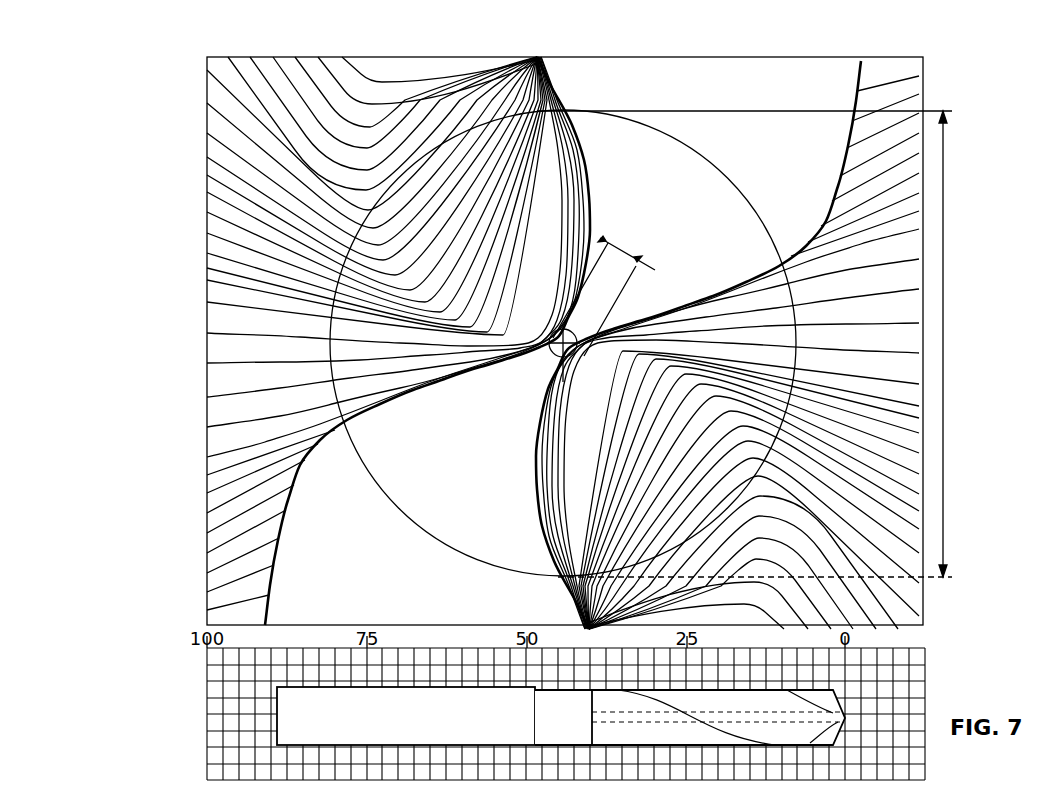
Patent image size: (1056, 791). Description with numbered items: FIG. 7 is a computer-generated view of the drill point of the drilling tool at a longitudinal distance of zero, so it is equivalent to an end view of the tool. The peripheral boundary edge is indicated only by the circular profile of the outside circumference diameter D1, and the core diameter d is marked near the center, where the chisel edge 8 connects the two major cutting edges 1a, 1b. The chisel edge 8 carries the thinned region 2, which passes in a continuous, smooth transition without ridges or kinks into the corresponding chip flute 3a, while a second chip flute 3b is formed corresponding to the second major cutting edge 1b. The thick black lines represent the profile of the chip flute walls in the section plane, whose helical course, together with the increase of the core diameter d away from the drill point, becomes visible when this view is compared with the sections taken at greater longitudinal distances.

The major cutting edge 1a is at (537, 93).
The major cutting edge 1b is at (590, 588).
The thinned region 2 is at (549, 343).
The chip flute 3a is at (495, 223).
The chip flute 3b is at (652, 481).
The chisel edge 8 is at (578, 350).
The core diameter d is at (604, 296).
The outside circumference diameter D1 is at (758, 344).